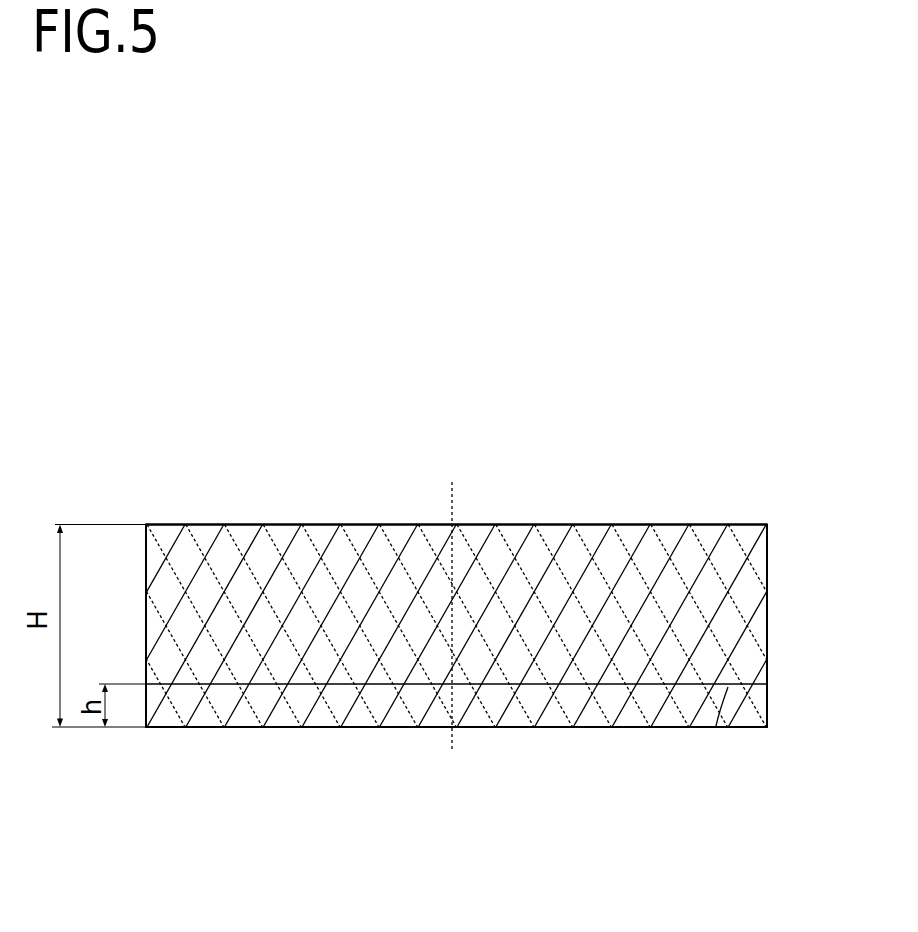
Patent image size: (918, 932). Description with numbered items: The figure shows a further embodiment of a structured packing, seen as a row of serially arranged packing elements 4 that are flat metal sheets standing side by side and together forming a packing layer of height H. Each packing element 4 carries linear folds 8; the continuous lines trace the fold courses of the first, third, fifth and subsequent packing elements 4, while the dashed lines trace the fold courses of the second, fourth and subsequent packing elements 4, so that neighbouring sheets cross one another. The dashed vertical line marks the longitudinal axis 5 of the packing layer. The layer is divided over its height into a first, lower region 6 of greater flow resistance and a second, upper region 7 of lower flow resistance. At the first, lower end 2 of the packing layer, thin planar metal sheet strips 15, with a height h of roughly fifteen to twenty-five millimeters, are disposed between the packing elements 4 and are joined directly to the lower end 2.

The first, lower end 2 is at (447, 636).
The packing element 4 is at (587, 526).
The longitudinal axis 5 is at (452, 490).
The first, lower region 6 is at (437, 675).
The second, upper region 7 is at (437, 587).
The linear folds 8 is at (695, 530).
The thin metal sheet strips 15 is at (716, 726).